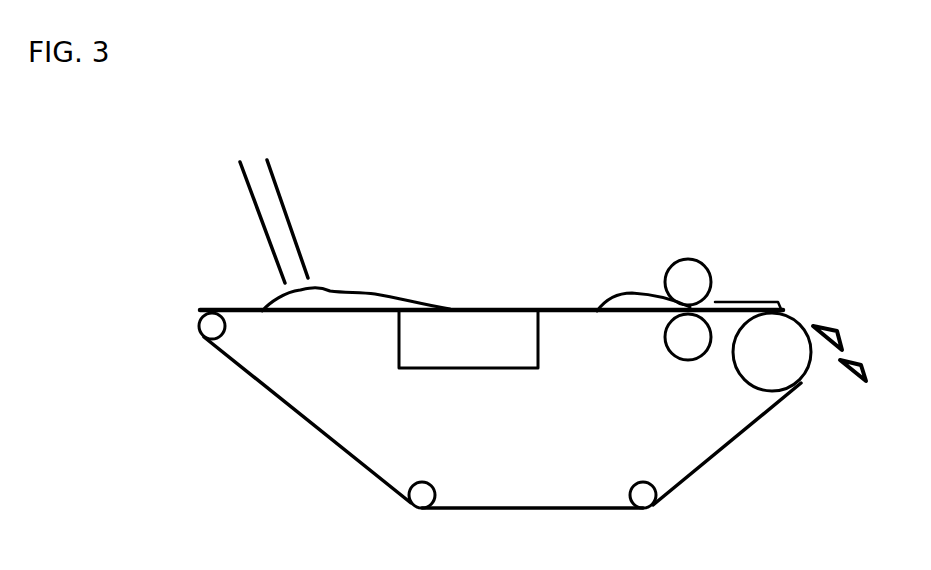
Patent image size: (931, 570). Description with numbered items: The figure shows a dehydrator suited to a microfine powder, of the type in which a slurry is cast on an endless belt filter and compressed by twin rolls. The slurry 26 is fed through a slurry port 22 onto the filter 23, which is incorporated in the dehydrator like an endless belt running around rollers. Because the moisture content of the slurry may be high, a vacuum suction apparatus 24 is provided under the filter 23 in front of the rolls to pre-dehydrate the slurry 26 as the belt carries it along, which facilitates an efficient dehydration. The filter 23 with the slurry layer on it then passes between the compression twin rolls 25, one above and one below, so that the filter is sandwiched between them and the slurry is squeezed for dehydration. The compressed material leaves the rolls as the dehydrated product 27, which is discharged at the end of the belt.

The slurry port 22 is at (257, 173).
The filter 23 is at (240, 313).
The vacuum suction apparatus 24 is at (420, 360).
The compression twin rolls 25 is at (683, 337).
The slurry 26 is at (333, 287).
The dehydrated product 27 is at (760, 297).